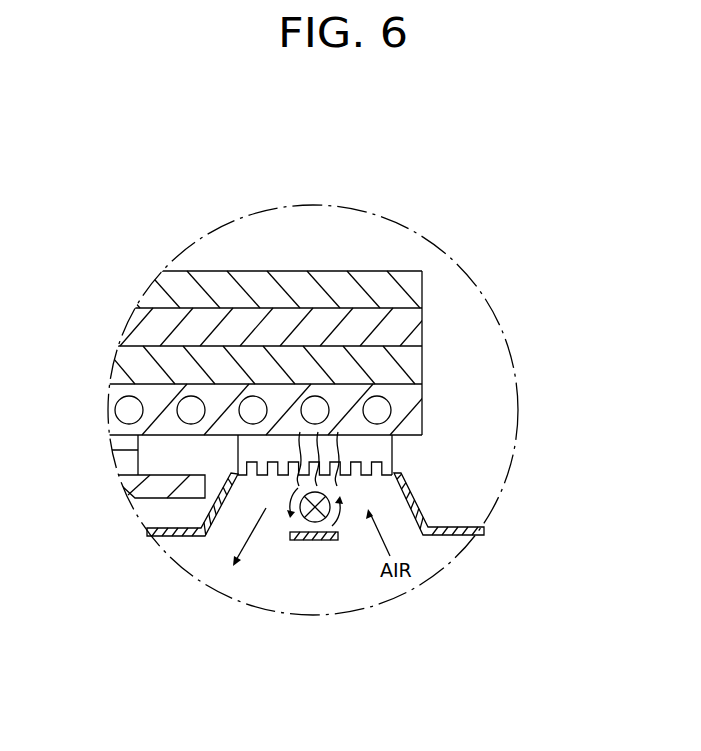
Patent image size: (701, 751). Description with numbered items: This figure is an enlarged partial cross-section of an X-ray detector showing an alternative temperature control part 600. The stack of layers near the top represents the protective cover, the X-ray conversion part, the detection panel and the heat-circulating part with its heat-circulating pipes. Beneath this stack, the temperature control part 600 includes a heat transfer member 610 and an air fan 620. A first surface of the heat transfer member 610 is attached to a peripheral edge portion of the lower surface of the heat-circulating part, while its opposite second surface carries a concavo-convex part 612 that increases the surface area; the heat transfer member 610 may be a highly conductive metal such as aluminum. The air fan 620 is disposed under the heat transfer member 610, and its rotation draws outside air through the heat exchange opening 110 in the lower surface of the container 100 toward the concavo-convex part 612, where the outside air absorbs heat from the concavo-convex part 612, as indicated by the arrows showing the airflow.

The temperature control part 600 is at (387, 486).
The heat transfer member 610 is at (393, 448).
The concavo-convex part 612 is at (338, 490).
The air fan 620 is at (394, 479).
The container 100 is at (175, 536).
The heat exchange opening 110 is at (276, 531).